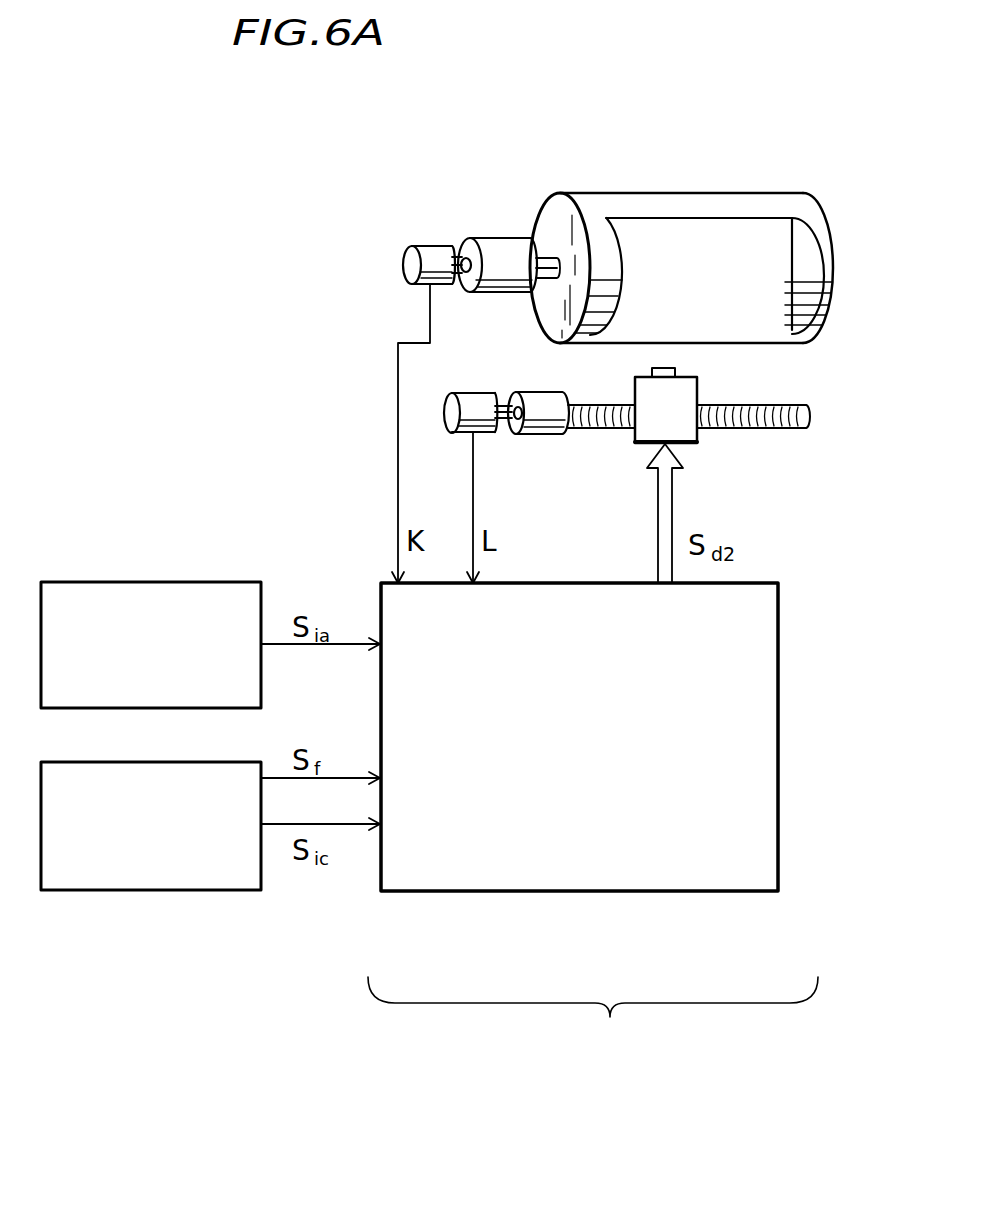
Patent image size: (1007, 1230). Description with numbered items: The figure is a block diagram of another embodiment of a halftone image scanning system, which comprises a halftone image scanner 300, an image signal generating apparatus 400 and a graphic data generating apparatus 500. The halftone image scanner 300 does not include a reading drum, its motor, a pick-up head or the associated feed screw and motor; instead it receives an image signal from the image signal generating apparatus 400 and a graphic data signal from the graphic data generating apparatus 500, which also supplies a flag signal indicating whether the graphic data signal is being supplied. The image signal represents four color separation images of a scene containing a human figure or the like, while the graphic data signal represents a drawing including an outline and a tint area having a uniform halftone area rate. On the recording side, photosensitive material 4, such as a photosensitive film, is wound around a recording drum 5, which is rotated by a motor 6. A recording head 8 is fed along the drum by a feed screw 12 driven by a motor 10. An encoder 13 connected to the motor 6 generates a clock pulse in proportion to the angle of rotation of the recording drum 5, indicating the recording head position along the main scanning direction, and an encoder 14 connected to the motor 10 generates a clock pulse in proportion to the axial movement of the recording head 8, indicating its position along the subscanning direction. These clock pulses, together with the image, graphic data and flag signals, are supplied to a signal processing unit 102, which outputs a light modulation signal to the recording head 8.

The photosensitive material 4 is at (700, 234).
The recording drum 5 is at (591, 207).
The motor 6 is at (503, 238).
The recording head 8 is at (700, 437).
The motor 10 is at (548, 437).
The feed screw 12 is at (797, 430).
The encoder 13 is at (441, 250).
The encoder 14 is at (471, 402).
The signal processing unit 102 is at (636, 892).
The halftone image scanner 300 is at (593, 1015).
The image signal generating apparatus 400 is at (155, 580).
The graphic data generating apparatus 500 is at (143, 893).